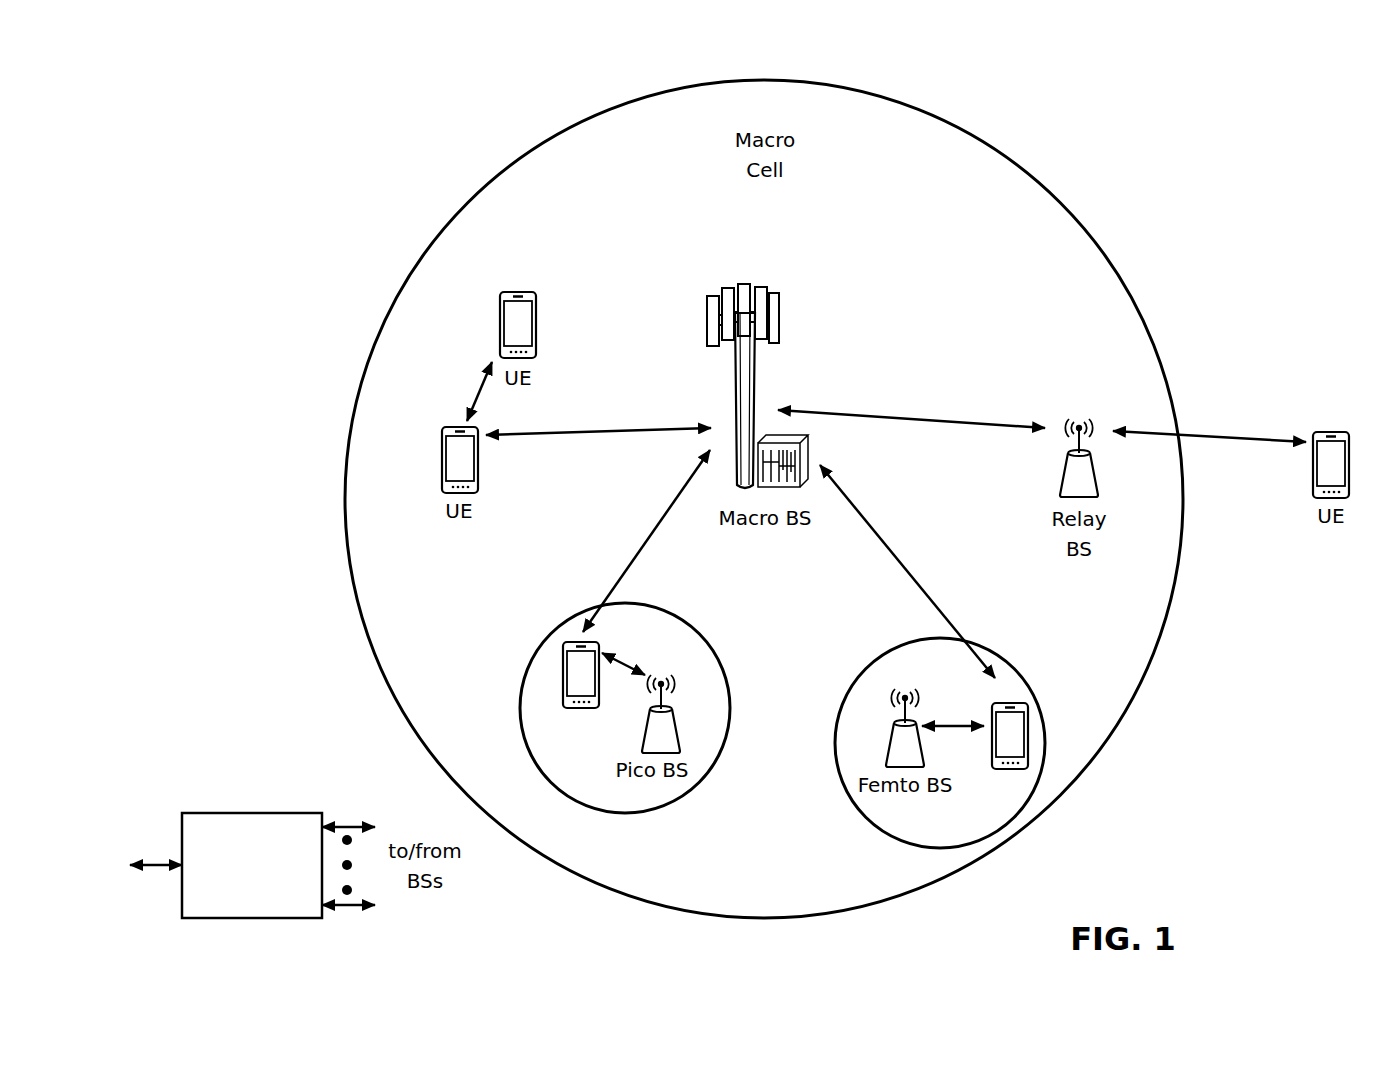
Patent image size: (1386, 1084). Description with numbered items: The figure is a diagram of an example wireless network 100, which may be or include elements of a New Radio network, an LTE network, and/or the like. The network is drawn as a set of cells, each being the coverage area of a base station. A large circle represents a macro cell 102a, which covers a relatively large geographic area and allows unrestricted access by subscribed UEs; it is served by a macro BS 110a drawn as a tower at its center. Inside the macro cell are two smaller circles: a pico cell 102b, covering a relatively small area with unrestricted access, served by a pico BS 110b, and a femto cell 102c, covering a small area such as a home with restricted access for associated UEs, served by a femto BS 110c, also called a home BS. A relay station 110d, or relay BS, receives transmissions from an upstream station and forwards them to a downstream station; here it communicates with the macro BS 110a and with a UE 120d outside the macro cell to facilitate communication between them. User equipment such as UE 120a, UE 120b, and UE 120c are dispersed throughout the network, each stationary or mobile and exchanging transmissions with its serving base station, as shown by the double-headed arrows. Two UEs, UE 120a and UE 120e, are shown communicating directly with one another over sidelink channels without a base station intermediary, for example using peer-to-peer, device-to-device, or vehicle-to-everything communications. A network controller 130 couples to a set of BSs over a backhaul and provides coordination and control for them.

The wireless network 100 is at (236, 76).
The macro cell 102a is at (1040, 184).
The pico cell 102b is at (716, 648).
The femto cell 102c is at (880, 657).
The macro BS 110a is at (752, 280).
The pico BS 110b is at (679, 740).
The femto BS 110c is at (889, 748).
The relay station 110d is at (1080, 416).
The UE 120a is at (442, 459).
The UE 120b is at (565, 708).
The UE 120c is at (994, 770).
The UE 120d is at (1345, 432).
The UE 120e is at (500, 310).
The network controller 130 is at (250, 813).